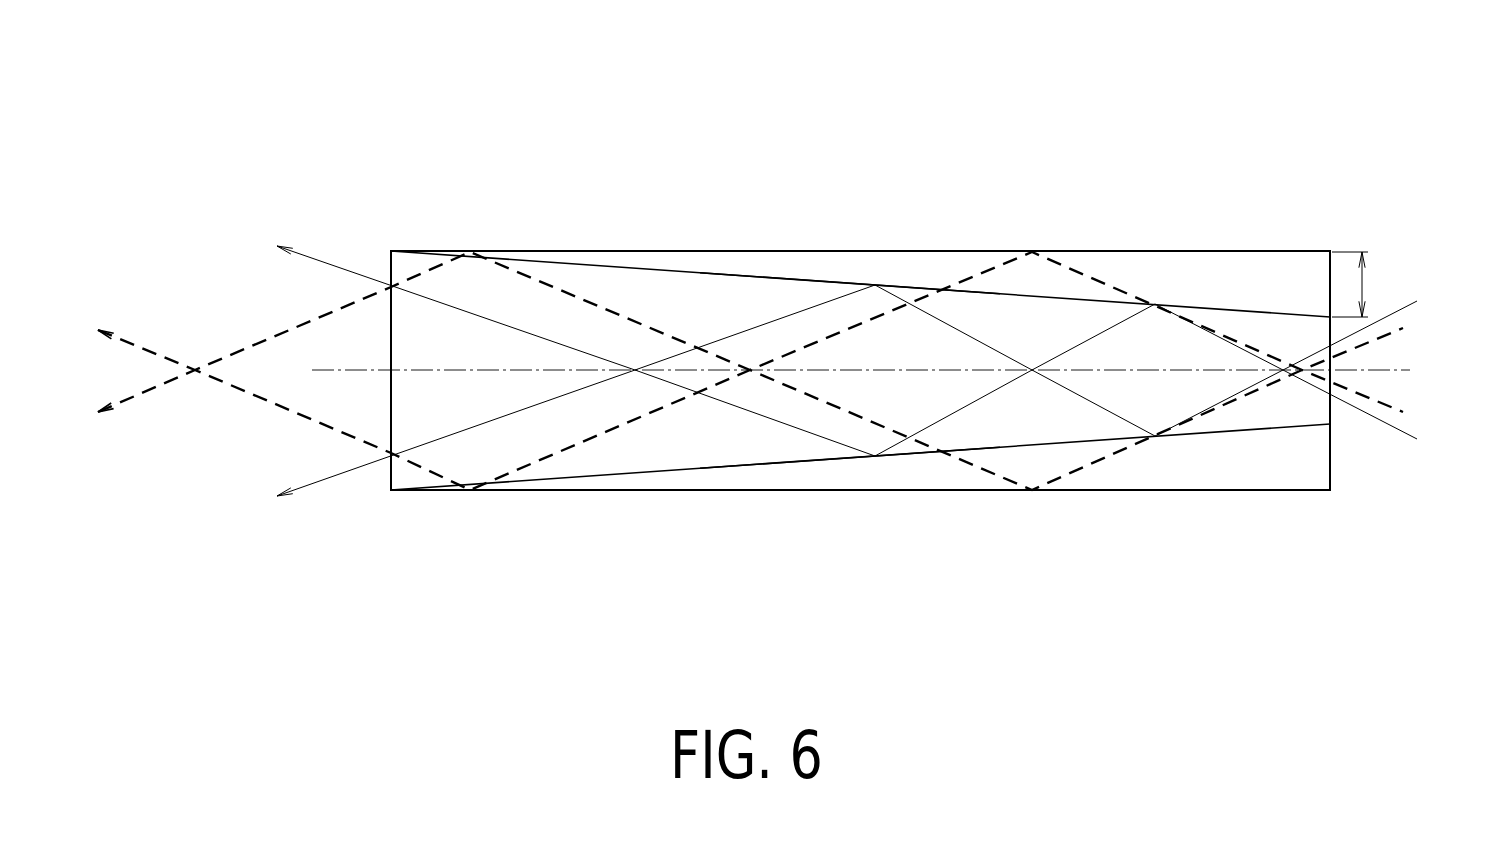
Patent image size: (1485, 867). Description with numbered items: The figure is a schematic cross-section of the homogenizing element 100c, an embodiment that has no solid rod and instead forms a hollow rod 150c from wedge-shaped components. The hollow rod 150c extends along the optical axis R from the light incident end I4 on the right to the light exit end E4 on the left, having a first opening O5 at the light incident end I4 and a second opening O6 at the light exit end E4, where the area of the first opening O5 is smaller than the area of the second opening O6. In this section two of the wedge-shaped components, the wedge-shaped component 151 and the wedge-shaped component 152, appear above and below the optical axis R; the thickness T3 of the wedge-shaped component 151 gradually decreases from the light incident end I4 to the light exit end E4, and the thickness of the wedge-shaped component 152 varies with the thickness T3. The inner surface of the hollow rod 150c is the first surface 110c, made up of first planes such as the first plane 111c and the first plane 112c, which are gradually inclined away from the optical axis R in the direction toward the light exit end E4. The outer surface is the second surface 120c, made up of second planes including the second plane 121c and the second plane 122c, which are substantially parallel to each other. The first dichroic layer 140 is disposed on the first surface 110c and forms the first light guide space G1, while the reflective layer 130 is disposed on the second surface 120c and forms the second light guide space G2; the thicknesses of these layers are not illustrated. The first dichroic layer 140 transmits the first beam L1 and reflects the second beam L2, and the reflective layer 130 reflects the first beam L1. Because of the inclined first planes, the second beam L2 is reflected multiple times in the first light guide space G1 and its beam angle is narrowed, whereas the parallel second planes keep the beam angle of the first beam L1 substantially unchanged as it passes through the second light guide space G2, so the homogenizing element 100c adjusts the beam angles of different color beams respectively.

The homogenizing element 100c is at (198, 73).
The first surface 110c is at (860, 370).
The first plane 111c is at (757, 281).
The first plane 112c is at (757, 461).
The second surface 120c is at (860, 370).
The second plane 121c is at (913, 252).
The second plane 122c is at (940, 490).
The reflective layer 130 is at (797, 250).
The first dichroic layer 140 is at (843, 283).
The hollow rod 150c is at (860, 370).
The wedge-shaped component 151 is at (1205, 285).
The wedge-shaped component 152 is at (1205, 458).
The light exit end E4 is at (390, 250).
The light incident end I4 is at (1333, 252).
The thickness T3 is at (1364, 284).
The first beam L1 is at (1405, 330).
The second beam L2 is at (1403, 308).
The first light guide space G1 is at (593, 456).
The second light guide space G2 is at (962, 270).
The first opening O5 is at (1333, 426).
The second opening O6 is at (390, 490).
The optical axis R is at (851, 370).